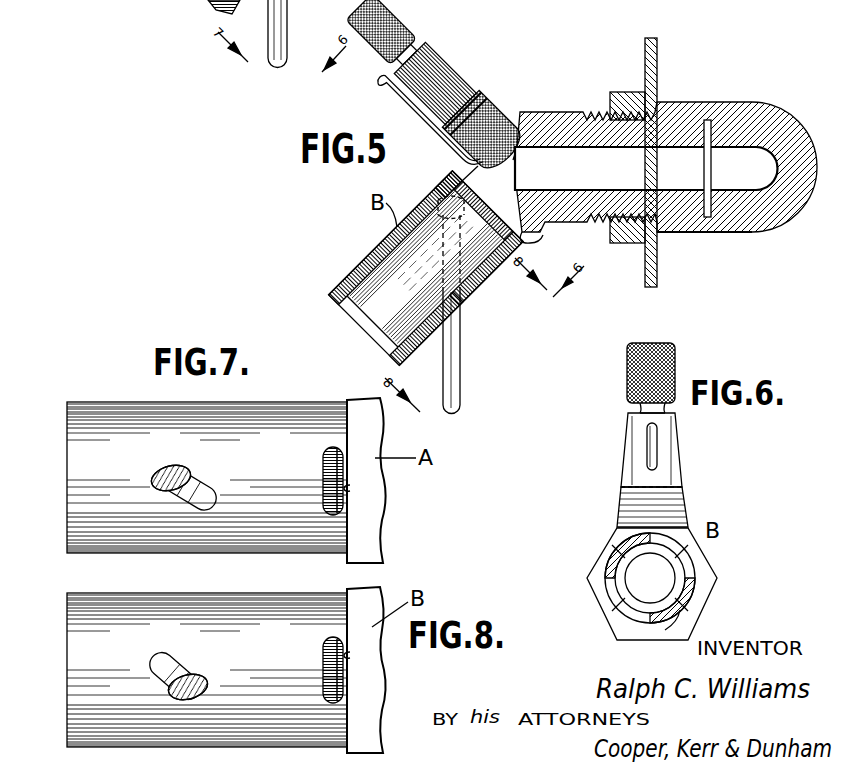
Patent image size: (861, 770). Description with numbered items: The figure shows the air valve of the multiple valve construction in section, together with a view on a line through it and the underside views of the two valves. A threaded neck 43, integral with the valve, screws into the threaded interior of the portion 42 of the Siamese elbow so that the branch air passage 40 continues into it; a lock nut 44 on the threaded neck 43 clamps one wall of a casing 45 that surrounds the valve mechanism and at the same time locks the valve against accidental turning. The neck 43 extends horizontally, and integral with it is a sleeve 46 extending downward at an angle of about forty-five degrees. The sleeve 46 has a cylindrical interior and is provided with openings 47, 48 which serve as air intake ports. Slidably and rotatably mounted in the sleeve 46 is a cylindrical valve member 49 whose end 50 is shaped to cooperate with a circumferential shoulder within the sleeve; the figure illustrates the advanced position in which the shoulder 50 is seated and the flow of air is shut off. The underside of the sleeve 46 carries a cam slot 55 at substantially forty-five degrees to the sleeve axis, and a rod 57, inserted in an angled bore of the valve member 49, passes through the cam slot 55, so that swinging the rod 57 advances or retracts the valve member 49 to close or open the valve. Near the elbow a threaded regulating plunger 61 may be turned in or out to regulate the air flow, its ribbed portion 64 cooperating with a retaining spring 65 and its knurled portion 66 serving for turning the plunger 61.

In FIG. 5, the branch air passage 40 is at (763, 158).
In FIG. 5, the portion of Siamese elbow 42 is at (693, 233).
In FIG. 5, the threaded neck 43 is at (683, 135).
In FIG. 5, the lock nut 44 is at (624, 90).
In FIG. 5, the casing 45 is at (657, 70).
In FIG. 5, the sleeve 46 is at (377, 255).
In FIG. 7, the sleeve 46 is at (283, 412).
In FIG. 8, the sleeve 46 is at (276, 612).
In FIG. 6, the sleeve 46 is at (603, 570).
In FIG. 5, the opening 47 is at (440, 186).
In FIG. 6, the opening 47 is at (625, 522).
In FIG. 5, the opening 48 is at (543, 240).
In FIG. 7, the opening 48 is at (350, 489).
In FIG. 8, the opening 48 is at (350, 655).
In FIG. 6, the opening 48 is at (672, 630).
In FIG. 5, the cylindrical valve member 49 is at (495, 302).
In FIG. 5, the end of valve member 50 is at (493, 197).
In FIG. 7, the end of valve member 50 is at (336, 470).
In FIG. 8, the end of valve member 50 is at (345, 690).
In FIG. 5, the cam slot 55 is at (432, 332).
In FIG. 7, the cam slot 55 is at (212, 498).
In FIG. 8, the cam slot 55 is at (182, 665).
In FIG. 5, the rod 57 is at (462, 350).
In FIG. 7, the rod 57 is at (176, 470).
In FIG. 8, the rod 57 is at (208, 682).
In FIG. 5, the threaded plunger 61 is at (481, 110).
In FIG. 5, the ribbed portion 64 is at (453, 63).
In FIG. 6, the ribbed portion 64 is at (628, 430).
In FIG. 5, the retaining spring 65 is at (407, 100).
In FIG. 6, the retaining spring 65 is at (647, 460).
In FIG. 5, the knurled portion 66 is at (408, 25).
In FIG. 6, the knurled portion 66 is at (627, 372).